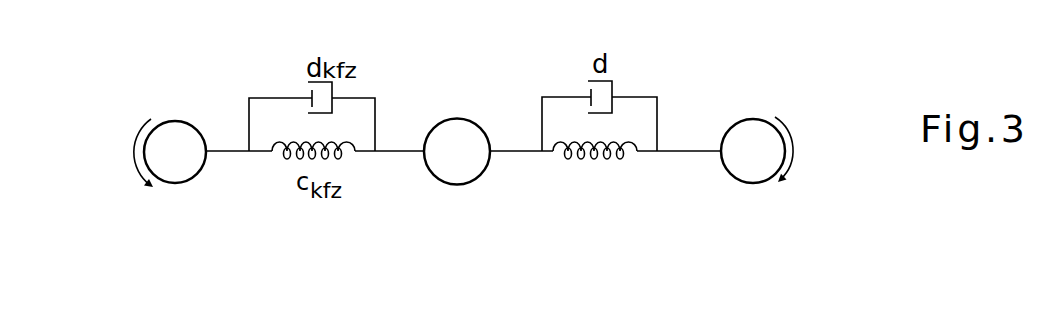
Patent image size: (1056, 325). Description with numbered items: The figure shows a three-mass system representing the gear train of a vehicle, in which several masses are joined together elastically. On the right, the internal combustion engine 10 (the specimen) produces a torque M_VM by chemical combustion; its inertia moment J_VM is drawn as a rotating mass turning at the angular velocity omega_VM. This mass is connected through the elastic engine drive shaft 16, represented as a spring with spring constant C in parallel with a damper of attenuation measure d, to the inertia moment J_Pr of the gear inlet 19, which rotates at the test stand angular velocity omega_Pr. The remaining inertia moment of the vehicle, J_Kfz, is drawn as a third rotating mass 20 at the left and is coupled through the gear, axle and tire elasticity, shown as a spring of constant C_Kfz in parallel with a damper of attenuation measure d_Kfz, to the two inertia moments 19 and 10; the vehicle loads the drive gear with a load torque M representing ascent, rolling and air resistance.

The internal combustion engine 10 is at (727, 170).
The drive shaft 16 is at (573, 158).
The gear inlet 19 is at (433, 173).
The vehicle inertia J_kfz 20 is at (198, 172).